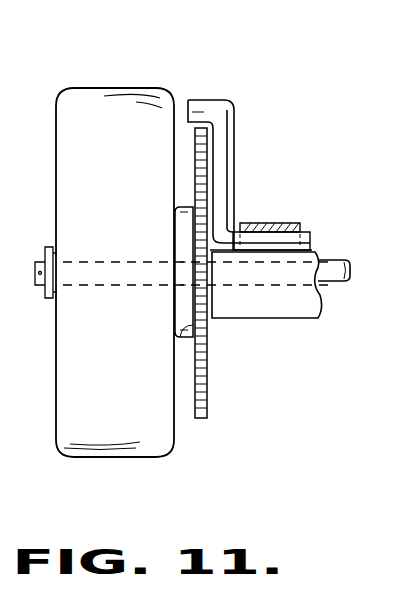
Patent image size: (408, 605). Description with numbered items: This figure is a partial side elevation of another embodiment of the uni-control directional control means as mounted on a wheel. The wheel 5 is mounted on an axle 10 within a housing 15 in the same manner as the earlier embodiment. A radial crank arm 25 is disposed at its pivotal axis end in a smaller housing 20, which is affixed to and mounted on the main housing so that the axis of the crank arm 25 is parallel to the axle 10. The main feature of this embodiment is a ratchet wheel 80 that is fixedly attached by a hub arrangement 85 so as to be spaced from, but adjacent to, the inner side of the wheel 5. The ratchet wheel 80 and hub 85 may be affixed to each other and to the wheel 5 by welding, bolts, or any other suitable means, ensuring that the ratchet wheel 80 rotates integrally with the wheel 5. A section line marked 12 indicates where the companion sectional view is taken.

The wheel 5 is at (115, 88).
The axle 10 is at (338, 258).
The section line 12- 12 is at (320, 80).
The housing 15 is at (305, 320).
The housing 20 is at (286, 226).
The radial crank arm 25 is at (200, 98).
The ratchet wheel 80 is at (210, 390).
The hub 85 is at (185, 340).